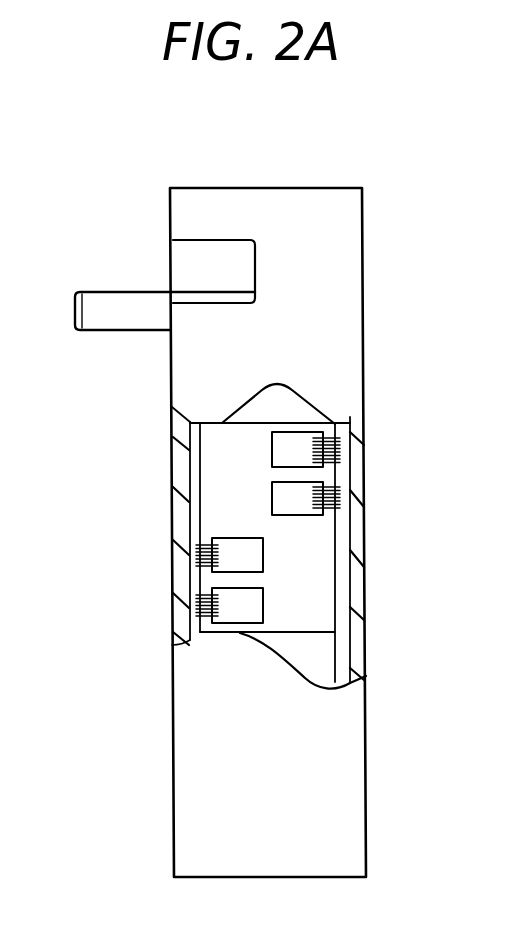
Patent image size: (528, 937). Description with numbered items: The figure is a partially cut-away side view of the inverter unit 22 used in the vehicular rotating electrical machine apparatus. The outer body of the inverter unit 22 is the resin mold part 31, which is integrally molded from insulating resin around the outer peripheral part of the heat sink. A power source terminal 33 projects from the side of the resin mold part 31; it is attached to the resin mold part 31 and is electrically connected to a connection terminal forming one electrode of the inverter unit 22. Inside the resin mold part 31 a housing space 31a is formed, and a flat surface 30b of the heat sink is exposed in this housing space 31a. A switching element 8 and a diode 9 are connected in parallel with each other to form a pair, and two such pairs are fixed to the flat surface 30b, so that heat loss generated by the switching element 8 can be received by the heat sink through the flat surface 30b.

The inverter unit 22 is at (427, 190).
The power source terminal 33 is at (110, 298).
The resin mold part 31 is at (343, 371).
The housing space 31a is at (192, 472).
The flat surface 30b is at (320, 568).
The switching element 8 is at (214, 543).
The diode 9 is at (214, 596).